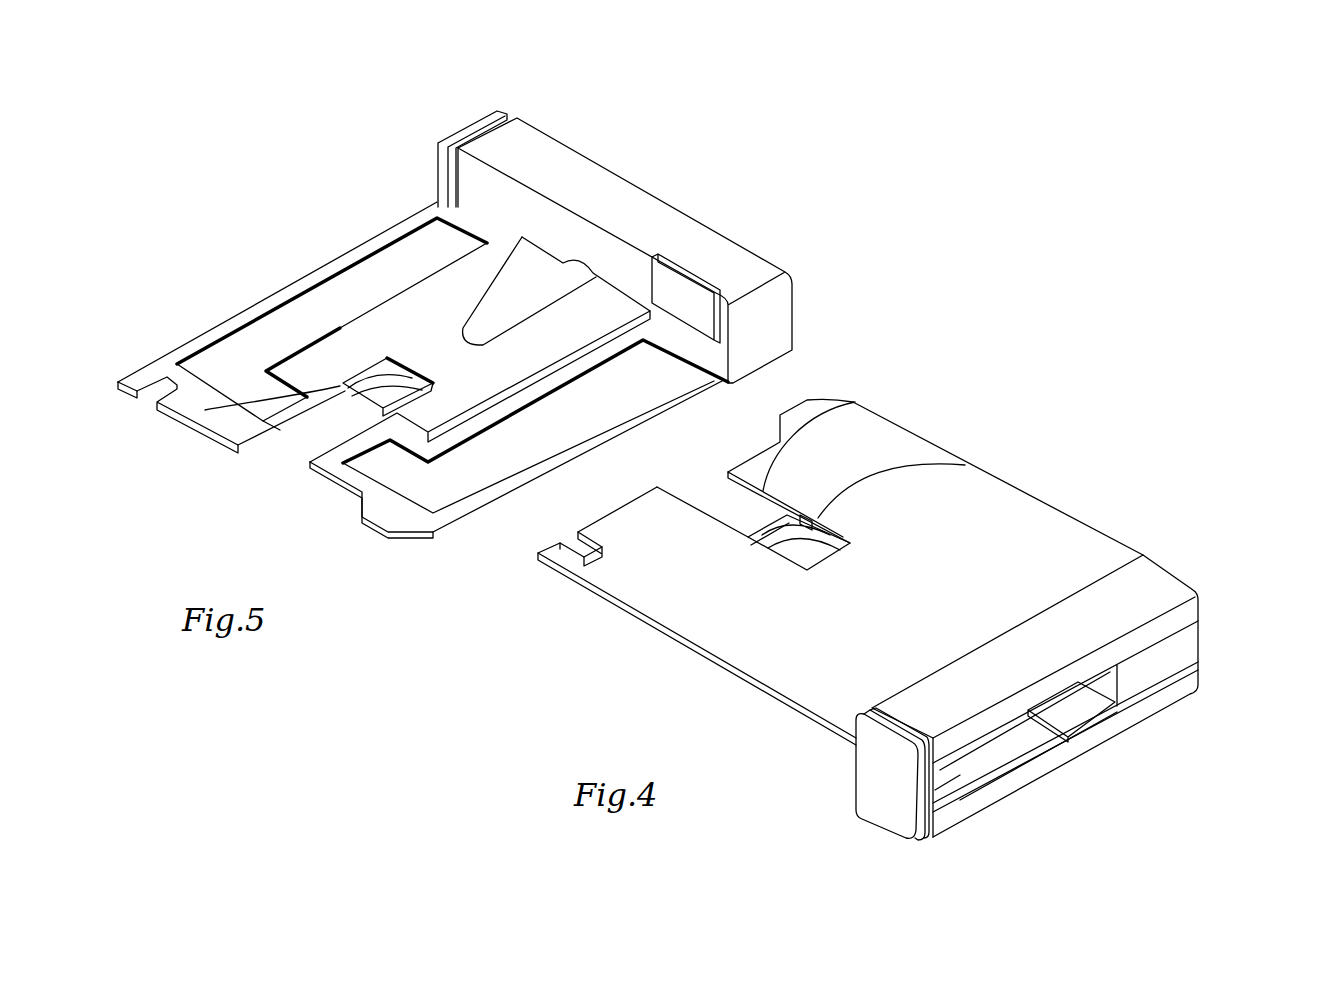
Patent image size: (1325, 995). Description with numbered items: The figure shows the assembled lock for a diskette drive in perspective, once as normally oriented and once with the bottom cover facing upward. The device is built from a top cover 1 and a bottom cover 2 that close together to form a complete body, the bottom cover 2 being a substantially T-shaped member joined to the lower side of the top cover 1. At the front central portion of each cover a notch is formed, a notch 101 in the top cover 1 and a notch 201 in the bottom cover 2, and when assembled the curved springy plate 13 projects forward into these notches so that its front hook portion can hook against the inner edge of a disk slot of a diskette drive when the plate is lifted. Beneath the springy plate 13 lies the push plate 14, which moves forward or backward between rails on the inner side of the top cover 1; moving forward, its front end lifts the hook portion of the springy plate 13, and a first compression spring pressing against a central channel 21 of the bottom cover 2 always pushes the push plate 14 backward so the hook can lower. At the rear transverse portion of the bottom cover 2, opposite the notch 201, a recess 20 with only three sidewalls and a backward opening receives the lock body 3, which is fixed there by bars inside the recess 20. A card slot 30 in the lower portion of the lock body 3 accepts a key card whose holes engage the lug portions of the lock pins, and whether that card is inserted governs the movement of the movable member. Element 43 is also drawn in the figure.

In FIG. 5, the top cover 1 is at (205, 410).
In FIG. 4, the top cover 1 is at (1037, 530).
In FIG. 5, the bottom cover 2 is at (452, 300).
In FIG. 4, the bottom cover 2 is at (1150, 702).
In FIG. 4, the lock body 3 is at (972, 768).
In FIG. 5, the springy plate 13 is at (235, 446).
In FIG. 4, the springy plate 13 is at (818, 518).
In FIG. 5, the push plate 14 is at (625, 250).
In FIG. 4, the push plate 14 is at (1090, 710).
In FIG. 4, the recess 20 is at (937, 787).
In FIG. 5, the central channel 21 is at (567, 277).
In FIG. 4, the card slot 30 is at (1025, 768).
In FIG. 5, the end tab 43 is at (453, 130).
In FIG. 4, the end tab 43 is at (865, 808).
In FIG. 5, the notch 101 is at (296, 452).
In FIG. 4, the notch 101 is at (862, 406).
In FIG. 5, the notch 201 is at (373, 363).